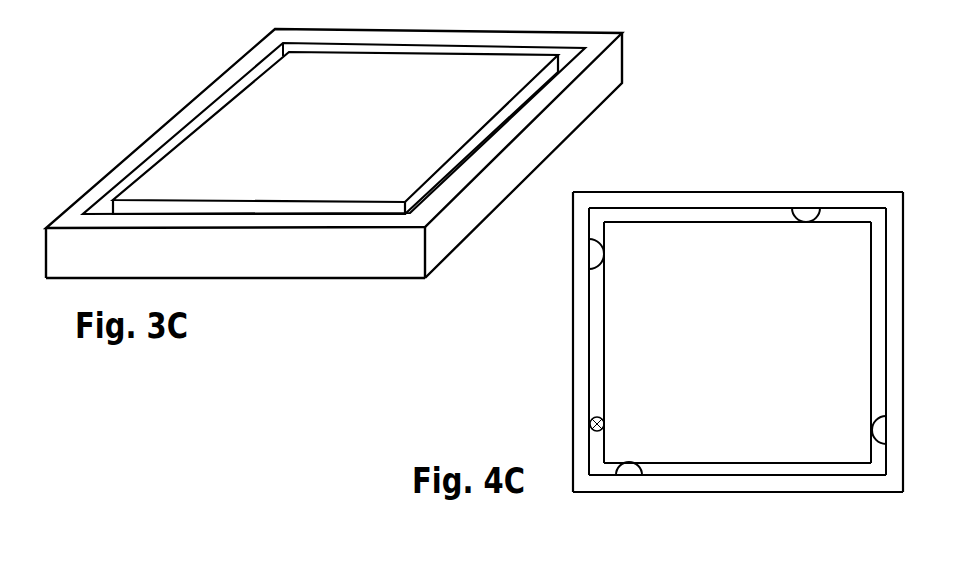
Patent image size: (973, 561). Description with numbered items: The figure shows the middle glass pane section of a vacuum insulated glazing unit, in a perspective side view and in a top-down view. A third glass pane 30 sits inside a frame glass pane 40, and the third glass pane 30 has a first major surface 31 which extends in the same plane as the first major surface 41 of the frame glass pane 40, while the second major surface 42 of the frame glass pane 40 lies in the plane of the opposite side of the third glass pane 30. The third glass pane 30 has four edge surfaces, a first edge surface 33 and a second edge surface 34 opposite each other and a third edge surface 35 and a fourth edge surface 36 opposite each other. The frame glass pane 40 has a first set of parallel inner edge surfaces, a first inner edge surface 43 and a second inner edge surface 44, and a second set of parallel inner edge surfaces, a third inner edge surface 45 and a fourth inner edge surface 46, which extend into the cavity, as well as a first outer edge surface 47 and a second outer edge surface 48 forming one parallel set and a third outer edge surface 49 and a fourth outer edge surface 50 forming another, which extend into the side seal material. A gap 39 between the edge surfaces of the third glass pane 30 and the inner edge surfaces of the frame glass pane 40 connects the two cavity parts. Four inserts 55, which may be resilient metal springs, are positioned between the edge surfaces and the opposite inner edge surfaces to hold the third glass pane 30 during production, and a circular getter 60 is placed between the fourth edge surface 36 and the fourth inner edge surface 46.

In FIG. 3C, the third glass pane 30 is at (335, 116).
In FIG. 4C, the third glass pane 30 is at (737, 342).
In FIG. 3C, the first major surface 31 is at (269, 124).
In FIG. 4C, the first major surface 31 is at (737, 342).
In FIG. 4C, the first edge surface 33 is at (649, 460).
In FIG. 4C, the second edge surface 34 is at (722, 222).
In FIG. 4C, the third edge surface 35 is at (871, 304).
In FIG. 4C, the fourth edge surface 36 is at (607, 338).
In FIG. 4C, the gap 39 is at (701, 341).
In FIG. 3C, the frame glass pane 40 is at (345, 194).
In FIG. 3C, the first major surface 41 is at (163, 137).
In FIG. 3C, the second major surface 42 is at (370, 278).
In FIG. 4C, the first inner edge surface 43 is at (726, 475).
In FIG. 4C, the second inner edge surface 44 is at (686, 208).
In FIG. 4C, the third inner edge surface 45 is at (886, 337).
In FIG. 4C, the fourth inner edge surface 46 is at (589, 381).
In FIG. 3C, the first outer edge surface 47 is at (271, 250).
In FIG. 4C, the first outer edge surface 47 is at (681, 492).
In FIG. 4C, the second outer edge surface 48 is at (669, 192).
In FIG. 3C, the third outer edge surface 49 is at (572, 109).
In FIG. 4C, the third outer edge surface 49 is at (903, 360).
In FIG. 4C, the fourth outer edge surface 50 is at (573, 355).
In FIG. 4C, the insert 55 is at (590, 264).
In FIG. 4C, the getter 60 is at (590, 424).